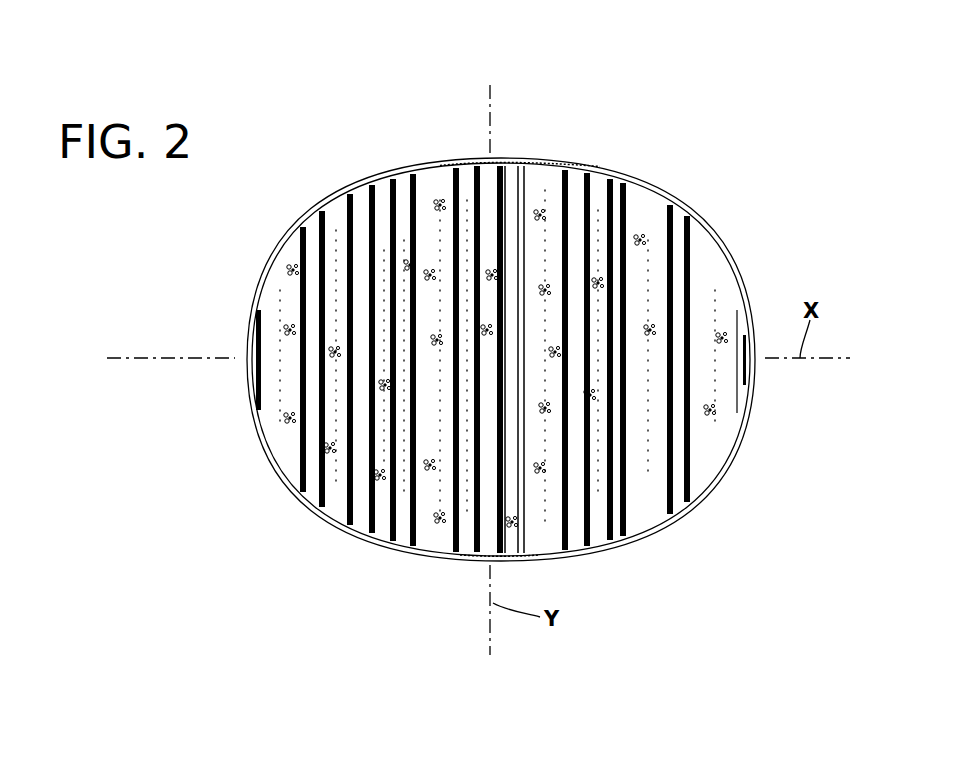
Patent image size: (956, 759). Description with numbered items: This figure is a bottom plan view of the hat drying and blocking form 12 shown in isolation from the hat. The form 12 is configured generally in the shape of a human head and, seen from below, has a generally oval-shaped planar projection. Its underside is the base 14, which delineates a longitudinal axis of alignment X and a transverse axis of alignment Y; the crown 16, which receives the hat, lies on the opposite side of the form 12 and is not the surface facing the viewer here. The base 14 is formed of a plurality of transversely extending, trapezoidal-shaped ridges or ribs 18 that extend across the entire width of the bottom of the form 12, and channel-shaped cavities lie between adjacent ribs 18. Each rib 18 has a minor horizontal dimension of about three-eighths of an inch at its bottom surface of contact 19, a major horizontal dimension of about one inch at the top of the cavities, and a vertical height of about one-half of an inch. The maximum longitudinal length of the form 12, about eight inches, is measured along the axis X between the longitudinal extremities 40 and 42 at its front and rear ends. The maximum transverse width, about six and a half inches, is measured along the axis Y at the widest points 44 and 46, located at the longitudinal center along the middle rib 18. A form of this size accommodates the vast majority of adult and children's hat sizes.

The hat drying and blocking form 12 is at (670, 524).
The base 14 is at (712, 425).
The crown 16 is at (383, 550).
The ribs 18 is at (283, 277).
The bottom surface of contact 19 is at (637, 207).
The longitudinal extremity 40 is at (246, 358).
The longitudinal extremity 42 is at (757, 358).
The widest point 44 is at (487, 157).
The widest point 46 is at (490, 561).